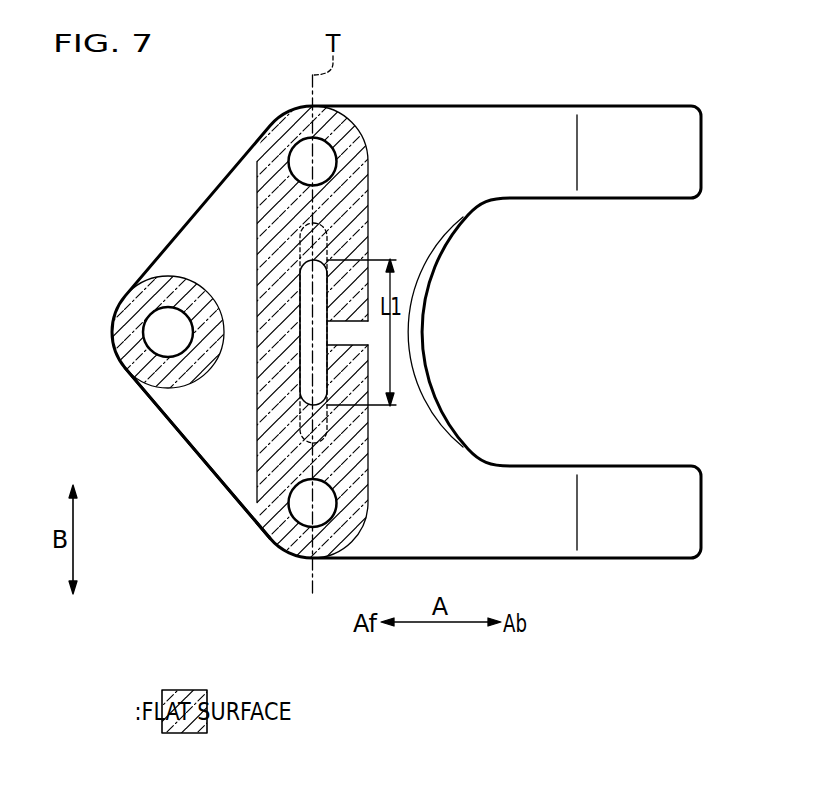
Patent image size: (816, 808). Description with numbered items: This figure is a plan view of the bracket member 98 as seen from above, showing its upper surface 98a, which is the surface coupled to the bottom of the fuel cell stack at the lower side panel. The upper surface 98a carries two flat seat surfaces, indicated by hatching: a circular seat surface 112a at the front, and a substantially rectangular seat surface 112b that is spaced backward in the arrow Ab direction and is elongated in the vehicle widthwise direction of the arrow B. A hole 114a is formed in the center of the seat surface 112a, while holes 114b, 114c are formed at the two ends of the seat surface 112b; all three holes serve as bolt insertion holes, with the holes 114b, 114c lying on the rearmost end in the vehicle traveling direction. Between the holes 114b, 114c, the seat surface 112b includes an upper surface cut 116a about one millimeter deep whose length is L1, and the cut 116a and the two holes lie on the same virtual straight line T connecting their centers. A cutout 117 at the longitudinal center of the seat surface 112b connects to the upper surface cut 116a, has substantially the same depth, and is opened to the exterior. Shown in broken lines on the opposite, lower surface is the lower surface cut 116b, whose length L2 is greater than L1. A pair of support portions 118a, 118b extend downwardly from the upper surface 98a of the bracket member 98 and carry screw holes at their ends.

The bracket member 98 is at (515, 57).
The upper surface 98a is at (197, 422).
The seat surface 112a is at (137, 358).
The seat surface 112b is at (350, 135).
The hole 114a is at (160, 328).
The hole 114b is at (302, 162).
The hole 114c is at (302, 515).
The upper surface cut 116a is at (307, 282).
The lower surface cut 116b is at (297, 243).
The cutout 117 is at (353, 323).
The support portion 118a is at (643, 117).
The support portion 118b is at (643, 550).